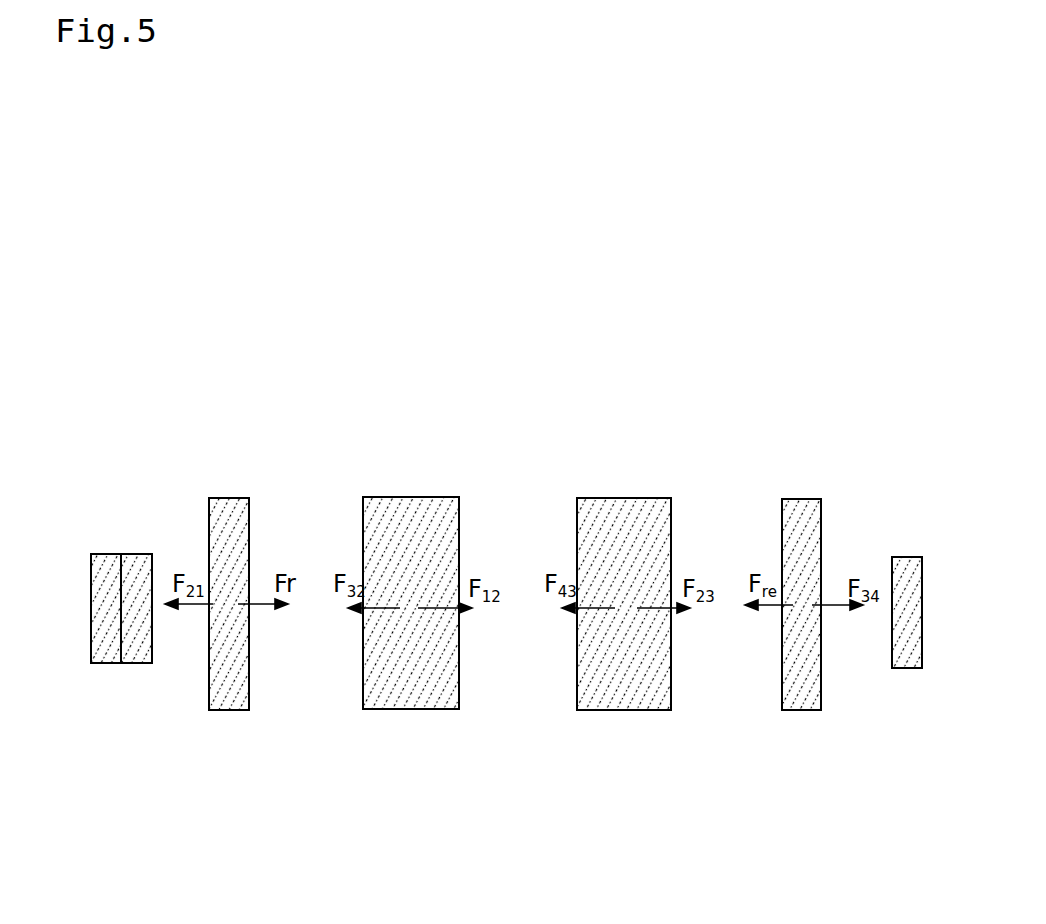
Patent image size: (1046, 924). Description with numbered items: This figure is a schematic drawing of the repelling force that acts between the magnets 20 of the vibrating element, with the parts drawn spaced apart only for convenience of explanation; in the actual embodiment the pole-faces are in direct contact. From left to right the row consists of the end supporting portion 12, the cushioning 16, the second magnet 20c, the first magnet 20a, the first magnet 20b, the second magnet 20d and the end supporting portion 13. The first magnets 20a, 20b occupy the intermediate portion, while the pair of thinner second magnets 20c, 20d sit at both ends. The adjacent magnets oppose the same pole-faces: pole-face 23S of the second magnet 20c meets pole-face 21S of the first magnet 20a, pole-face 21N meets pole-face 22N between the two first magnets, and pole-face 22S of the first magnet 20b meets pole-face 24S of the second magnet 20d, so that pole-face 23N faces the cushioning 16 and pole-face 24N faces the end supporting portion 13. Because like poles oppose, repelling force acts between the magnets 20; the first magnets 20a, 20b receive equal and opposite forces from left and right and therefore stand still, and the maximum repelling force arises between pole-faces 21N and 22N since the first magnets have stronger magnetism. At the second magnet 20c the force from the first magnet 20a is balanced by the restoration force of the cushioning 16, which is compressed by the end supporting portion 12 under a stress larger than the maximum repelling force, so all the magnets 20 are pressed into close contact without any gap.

The end supporting portion 12 is at (104, 554).
The cushioning 16 is at (135, 663).
The end supporting portion 13 is at (905, 668).
The magnets 20 is at (230, 532).
The second magnet 20c is at (228, 472).
The first magnet 20a is at (403, 476).
The first magnet 20b is at (621, 477).
The second magnet 20d is at (798, 479).
The pole-face of the N-pole of the second magnet 23N is at (209, 511).
The pole-face of the S-pole of the second magnet 23S is at (249, 518).
The pole-face of the S-pole of the first magnet 21S is at (363, 677).
The pole-face of the N-pole of the first magnet 21N is at (459, 676).
The pole-face of the N-pole of the first magnet 22N is at (577, 537).
The pole-face of the S-pole of the first magnet 22S is at (671, 673).
The pole-face of the S-pole of the second magnet 24S is at (782, 532).
The pole-face of the N-pole of the second magnet 24N is at (821, 513).